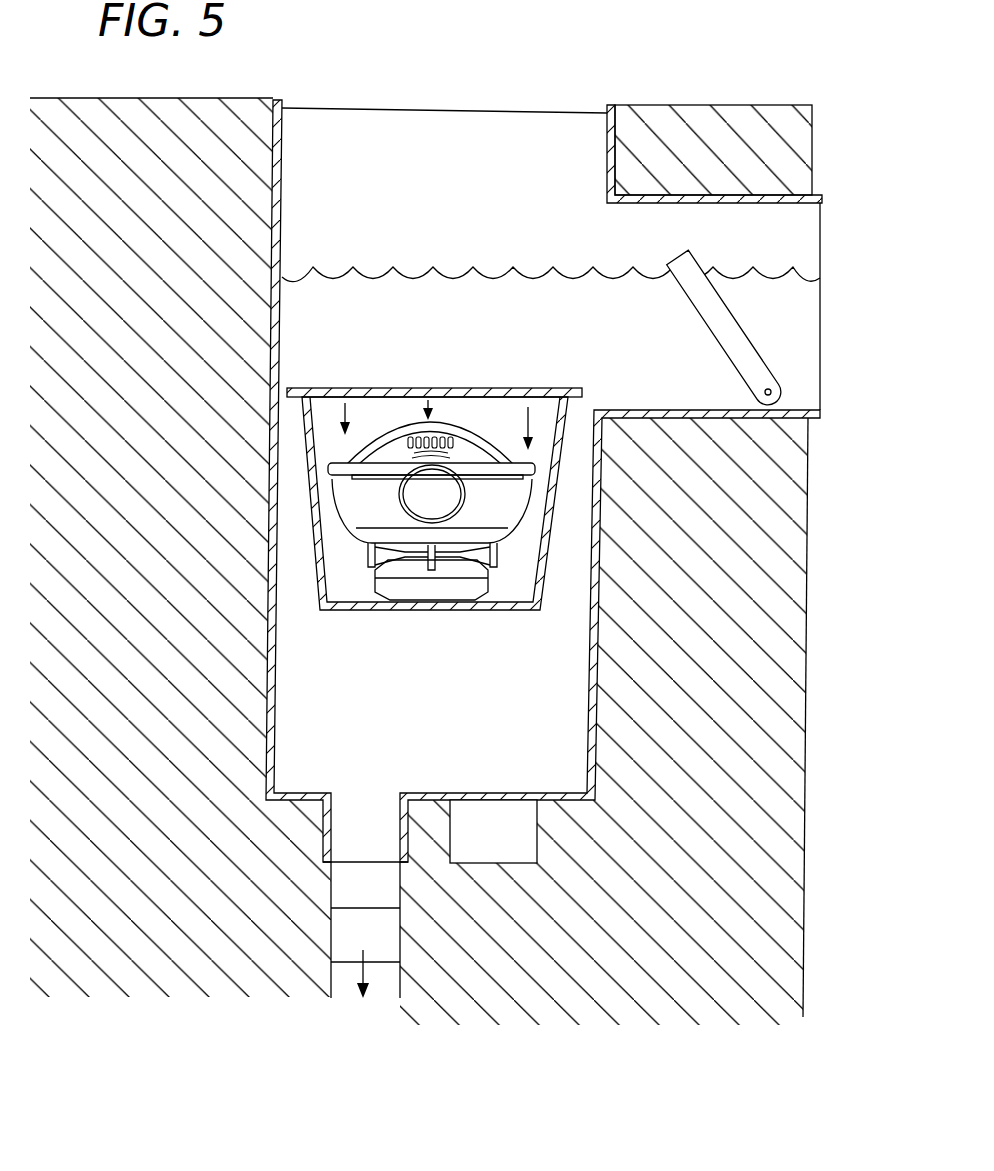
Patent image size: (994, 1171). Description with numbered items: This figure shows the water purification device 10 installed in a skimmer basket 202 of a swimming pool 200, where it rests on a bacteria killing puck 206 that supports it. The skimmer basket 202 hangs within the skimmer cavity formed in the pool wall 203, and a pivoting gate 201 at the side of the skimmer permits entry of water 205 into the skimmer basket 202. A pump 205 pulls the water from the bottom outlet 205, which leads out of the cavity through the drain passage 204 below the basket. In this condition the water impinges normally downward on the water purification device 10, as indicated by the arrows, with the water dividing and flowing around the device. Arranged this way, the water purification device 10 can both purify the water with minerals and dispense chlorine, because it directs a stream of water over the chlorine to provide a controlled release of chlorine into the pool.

The water purification device 10 is at (479, 412).
The swimming pool 200 is at (726, 90).
The pivoting gate 201 is at (763, 358).
The skimmer basket 202 is at (510, 388).
The tank wall 203 is at (597, 700).
The drain outlet 204 is at (352, 830).
The water 205 is at (333, 919).
The bacteria killing puck 206 is at (462, 596).